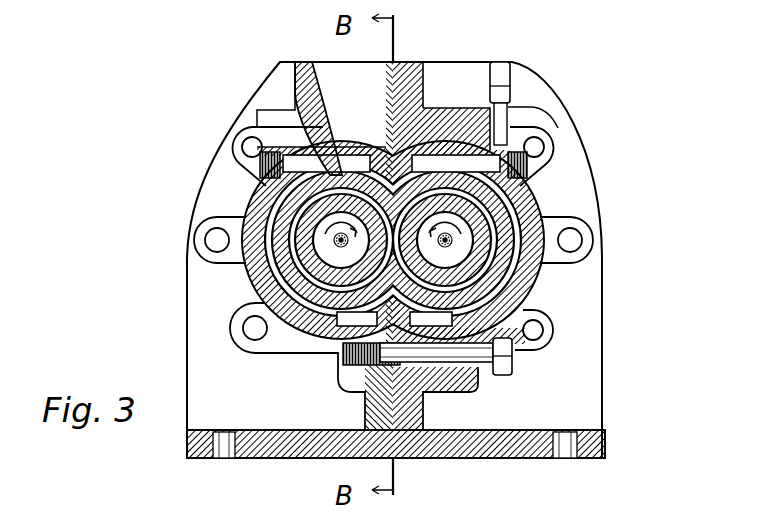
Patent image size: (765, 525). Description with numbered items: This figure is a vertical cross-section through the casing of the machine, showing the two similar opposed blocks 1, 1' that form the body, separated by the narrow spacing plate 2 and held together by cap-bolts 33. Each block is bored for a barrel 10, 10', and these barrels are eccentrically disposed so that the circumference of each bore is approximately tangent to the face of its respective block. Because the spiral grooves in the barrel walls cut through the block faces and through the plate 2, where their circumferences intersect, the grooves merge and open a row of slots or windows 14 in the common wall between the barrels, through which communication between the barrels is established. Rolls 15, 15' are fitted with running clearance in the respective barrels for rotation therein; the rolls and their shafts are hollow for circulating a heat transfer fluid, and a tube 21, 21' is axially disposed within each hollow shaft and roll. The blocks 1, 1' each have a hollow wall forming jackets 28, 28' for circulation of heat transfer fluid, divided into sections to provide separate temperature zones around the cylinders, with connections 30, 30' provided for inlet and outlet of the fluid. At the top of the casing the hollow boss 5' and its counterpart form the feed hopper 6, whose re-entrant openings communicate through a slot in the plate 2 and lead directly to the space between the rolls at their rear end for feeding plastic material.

The block 1 is at (493, 256).
The block 1' is at (291, 257).
The spacing plate 2 is at (398, 417).
The hollow boss 5' is at (282, 118).
The feed hopper 6 is at (349, 92).
The barrel 10 is at (519, 260).
The barrel 10' is at (266, 260).
The slots or windows 14 is at (340, 250).
The roll 15 is at (506, 240).
The roll 15' is at (276, 258).
The tube 21 is at (552, 348).
The tube 21' is at (263, 345).
The jacket 28 is at (463, 240).
The jacket 28' is at (296, 240).
The connection 30 is at (563, 159).
The connection 30' is at (226, 153).
The cap-bolt 33 is at (506, 87).